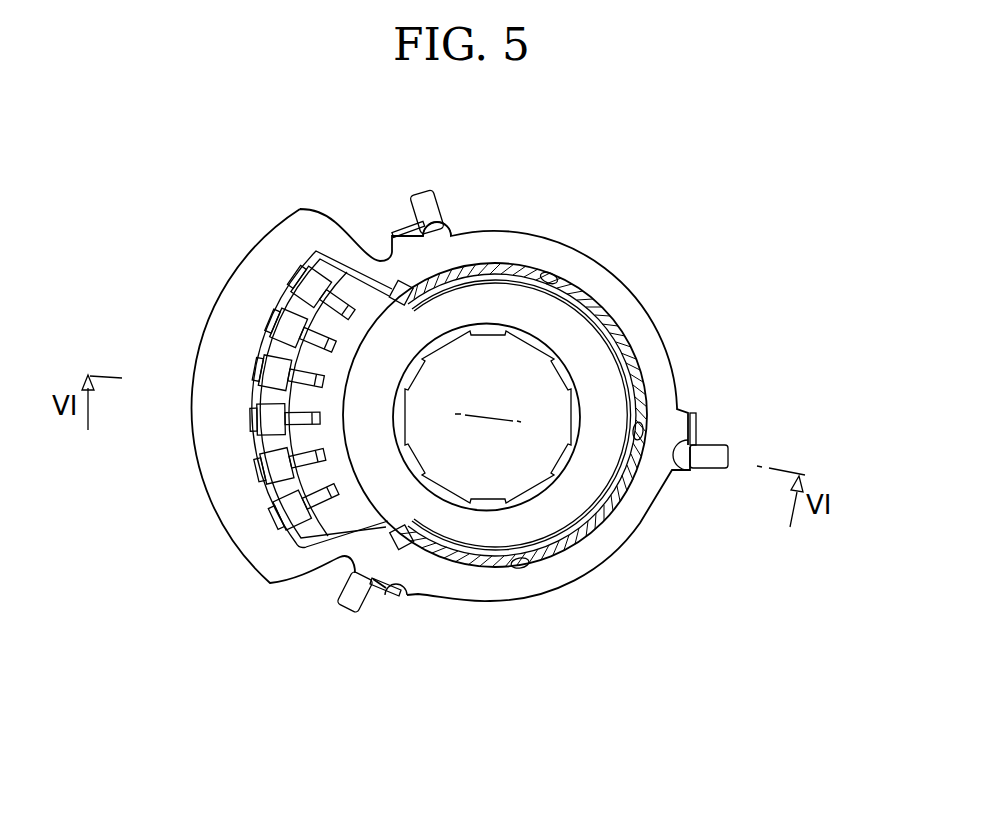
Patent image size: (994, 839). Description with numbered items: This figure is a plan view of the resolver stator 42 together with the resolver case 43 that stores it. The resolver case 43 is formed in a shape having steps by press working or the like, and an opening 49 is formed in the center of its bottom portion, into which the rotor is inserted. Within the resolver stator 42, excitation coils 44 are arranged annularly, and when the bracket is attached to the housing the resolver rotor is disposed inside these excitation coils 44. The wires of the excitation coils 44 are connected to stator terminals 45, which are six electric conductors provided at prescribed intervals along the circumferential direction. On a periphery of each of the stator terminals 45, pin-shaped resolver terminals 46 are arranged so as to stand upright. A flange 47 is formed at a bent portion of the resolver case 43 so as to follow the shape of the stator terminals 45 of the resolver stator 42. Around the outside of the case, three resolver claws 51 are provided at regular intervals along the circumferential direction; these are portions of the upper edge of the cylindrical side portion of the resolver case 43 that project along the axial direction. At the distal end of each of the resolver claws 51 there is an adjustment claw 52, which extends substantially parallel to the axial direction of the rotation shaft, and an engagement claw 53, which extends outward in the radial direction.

The resolver stator 42 is at (597, 309).
The resolver case 43 is at (587, 248).
The excitation coils 44 is at (597, 373).
The stator terminals 45 is at (283, 505).
The resolver terminals 46 is at (280, 520).
The flange 47 is at (237, 322).
The opening 49 is at (513, 473).
The resolver claws 51 is at (697, 423).
The adjustment claw 52 is at (700, 530).
The engagement claw 53 is at (708, 462).